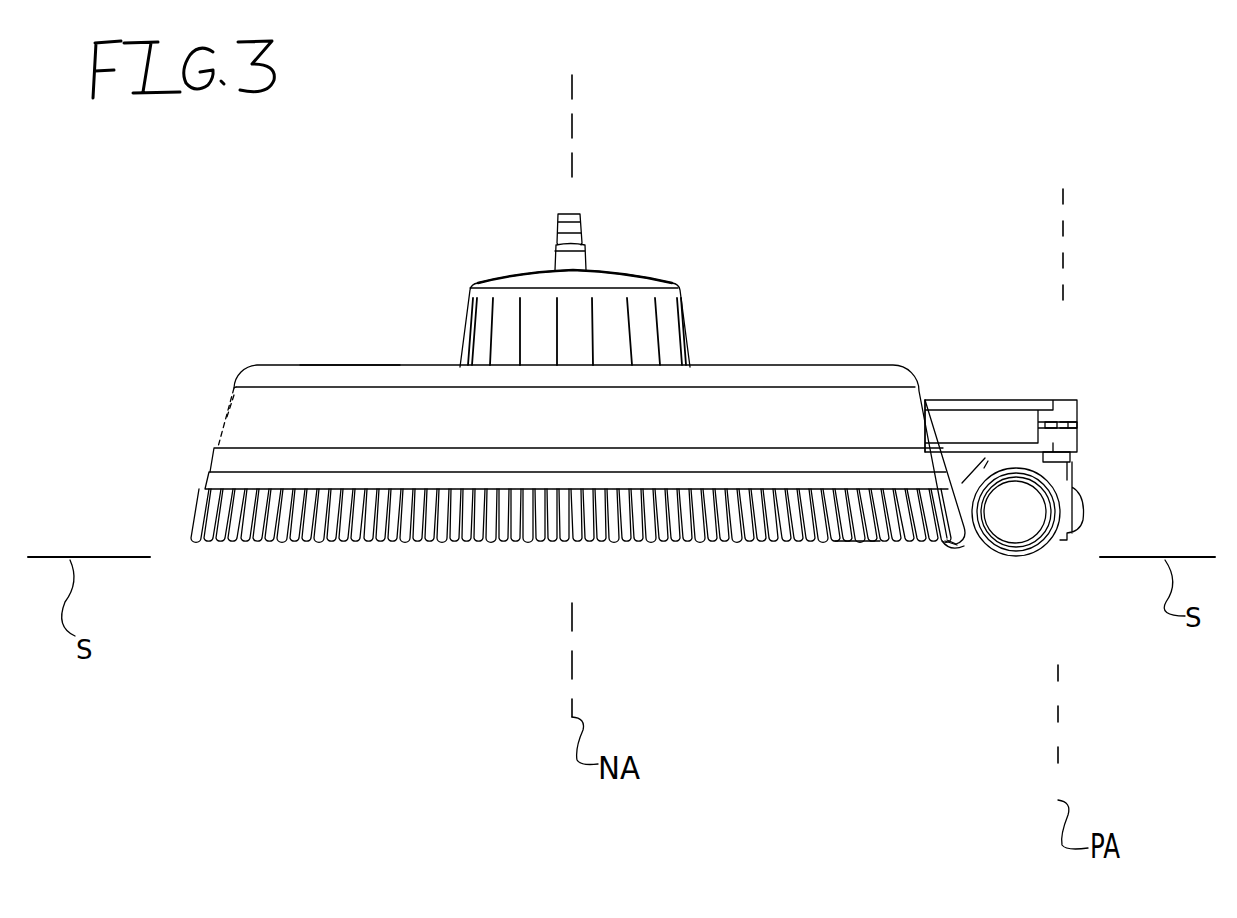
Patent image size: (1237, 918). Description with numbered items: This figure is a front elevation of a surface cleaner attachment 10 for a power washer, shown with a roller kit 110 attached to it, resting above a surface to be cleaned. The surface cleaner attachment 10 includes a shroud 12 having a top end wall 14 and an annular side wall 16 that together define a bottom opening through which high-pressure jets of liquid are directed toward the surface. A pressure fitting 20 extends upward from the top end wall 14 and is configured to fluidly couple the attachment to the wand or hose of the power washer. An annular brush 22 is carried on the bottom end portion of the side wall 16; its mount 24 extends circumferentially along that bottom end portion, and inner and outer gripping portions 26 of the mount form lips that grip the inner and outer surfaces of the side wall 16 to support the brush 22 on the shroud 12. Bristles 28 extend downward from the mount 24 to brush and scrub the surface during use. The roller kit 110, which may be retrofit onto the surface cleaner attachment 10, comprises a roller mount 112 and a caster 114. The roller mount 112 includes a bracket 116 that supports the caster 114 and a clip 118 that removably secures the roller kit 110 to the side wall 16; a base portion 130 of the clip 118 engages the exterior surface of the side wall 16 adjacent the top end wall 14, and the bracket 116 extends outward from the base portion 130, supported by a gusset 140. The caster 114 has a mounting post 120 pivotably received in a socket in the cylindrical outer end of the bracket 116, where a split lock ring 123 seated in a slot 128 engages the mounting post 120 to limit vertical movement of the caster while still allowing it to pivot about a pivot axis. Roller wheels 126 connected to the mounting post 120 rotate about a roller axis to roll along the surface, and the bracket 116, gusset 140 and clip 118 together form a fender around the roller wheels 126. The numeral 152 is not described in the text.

The surface cleaner attachment 10 is at (299, 690).
The shroud 12 is at (845, 366).
The top end wall 14 is at (345, 365).
The annular side wall 16 is at (247, 421).
The pressure fitting 20 is at (586, 220).
The annular brush 22 is at (788, 546).
The mount 24 is at (602, 448).
The gripping portions 26 is at (727, 458).
The bristles 28 is at (858, 541).
The roller kit 110 is at (1058, 382).
The roller mount 112 is at (957, 398).
The caster 114 is at (1010, 556).
The bracket 116 is at (987, 402).
The clip 118 is at (950, 549).
The mounting post 120 is at (1068, 424).
The split lock ring 123 is at (1050, 421).
The roller wheels 126 is at (1040, 512).
The slot 128 is at (1070, 427).
The base portion 130 is at (930, 406).
The gusset 140 is at (985, 460).
The pad 152 is at (961, 549).